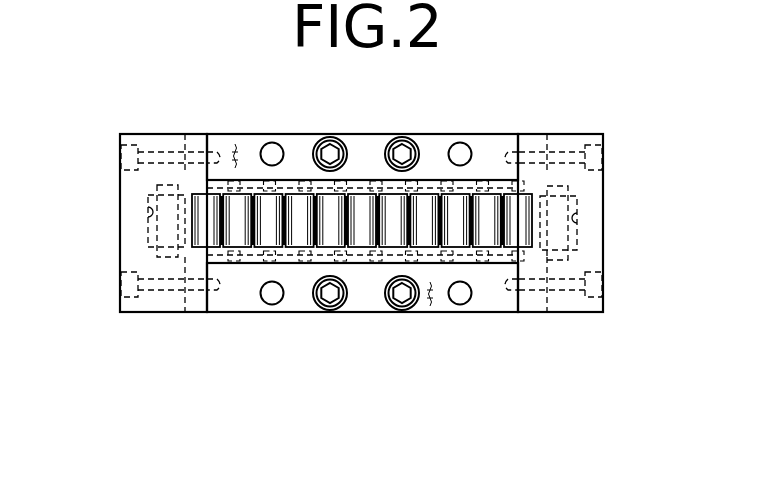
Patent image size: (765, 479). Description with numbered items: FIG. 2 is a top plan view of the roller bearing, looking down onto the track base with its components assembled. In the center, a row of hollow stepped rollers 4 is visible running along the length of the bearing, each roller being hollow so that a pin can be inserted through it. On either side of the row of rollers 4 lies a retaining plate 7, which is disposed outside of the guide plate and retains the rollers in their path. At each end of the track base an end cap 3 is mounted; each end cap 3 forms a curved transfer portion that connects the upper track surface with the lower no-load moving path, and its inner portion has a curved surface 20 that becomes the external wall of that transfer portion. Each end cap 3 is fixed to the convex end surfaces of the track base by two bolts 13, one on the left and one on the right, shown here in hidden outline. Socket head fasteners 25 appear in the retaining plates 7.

The end cap 3 is at (165, 134).
The hollow stepped roller 4 is at (353, 203).
The retaining plate 7 is at (296, 145).
The bolt 13 is at (120, 155).
The curved surface 20 is at (148, 212).
The hexagon socket bolt 25 is at (328, 299).